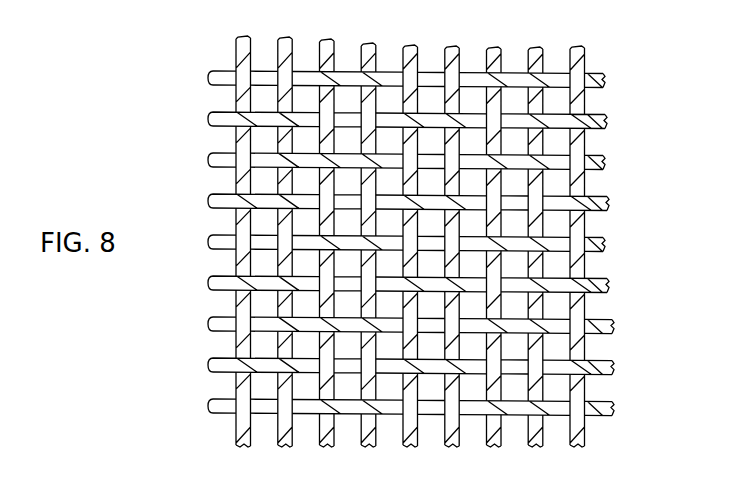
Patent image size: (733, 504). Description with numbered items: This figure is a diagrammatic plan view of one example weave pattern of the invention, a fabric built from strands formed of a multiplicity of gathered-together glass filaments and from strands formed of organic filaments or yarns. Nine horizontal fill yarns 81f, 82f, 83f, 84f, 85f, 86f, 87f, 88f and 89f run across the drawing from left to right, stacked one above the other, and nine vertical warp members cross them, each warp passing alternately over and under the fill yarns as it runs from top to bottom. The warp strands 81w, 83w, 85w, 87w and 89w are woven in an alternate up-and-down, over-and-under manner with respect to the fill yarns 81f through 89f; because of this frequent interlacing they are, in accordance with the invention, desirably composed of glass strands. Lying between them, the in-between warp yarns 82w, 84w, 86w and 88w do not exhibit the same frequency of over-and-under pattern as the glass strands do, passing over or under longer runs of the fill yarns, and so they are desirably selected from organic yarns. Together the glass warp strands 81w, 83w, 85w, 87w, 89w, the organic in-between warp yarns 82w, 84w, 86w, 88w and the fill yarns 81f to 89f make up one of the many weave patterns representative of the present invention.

The fill yarn 81f is at (214, 78).
The fill yarn 82f is at (214, 119).
The fill yarn 83f is at (214, 160).
The fill yarn 84f is at (214, 201).
The fill yarn 85f is at (214, 242).
The fill yarn 86f is at (214, 283).
The fill yarn 87f is at (214, 324).
The fill yarn 88f is at (214, 365).
The fill yarn 89f is at (214, 406).
The warp strand 81w is at (243, 447).
The in-between warp yarn 82w is at (285, 447).
The warp strand 83w is at (326, 447).
The in-between warp yarn 84w is at (368, 447).
The warp strand 85w is at (410, 447).
The in-between warp yarn 86w is at (452, 447).
The warp strand 87w is at (494, 447).
The in-between warp yarn 88w is at (535, 447).
The warp strand 89w is at (577, 447).